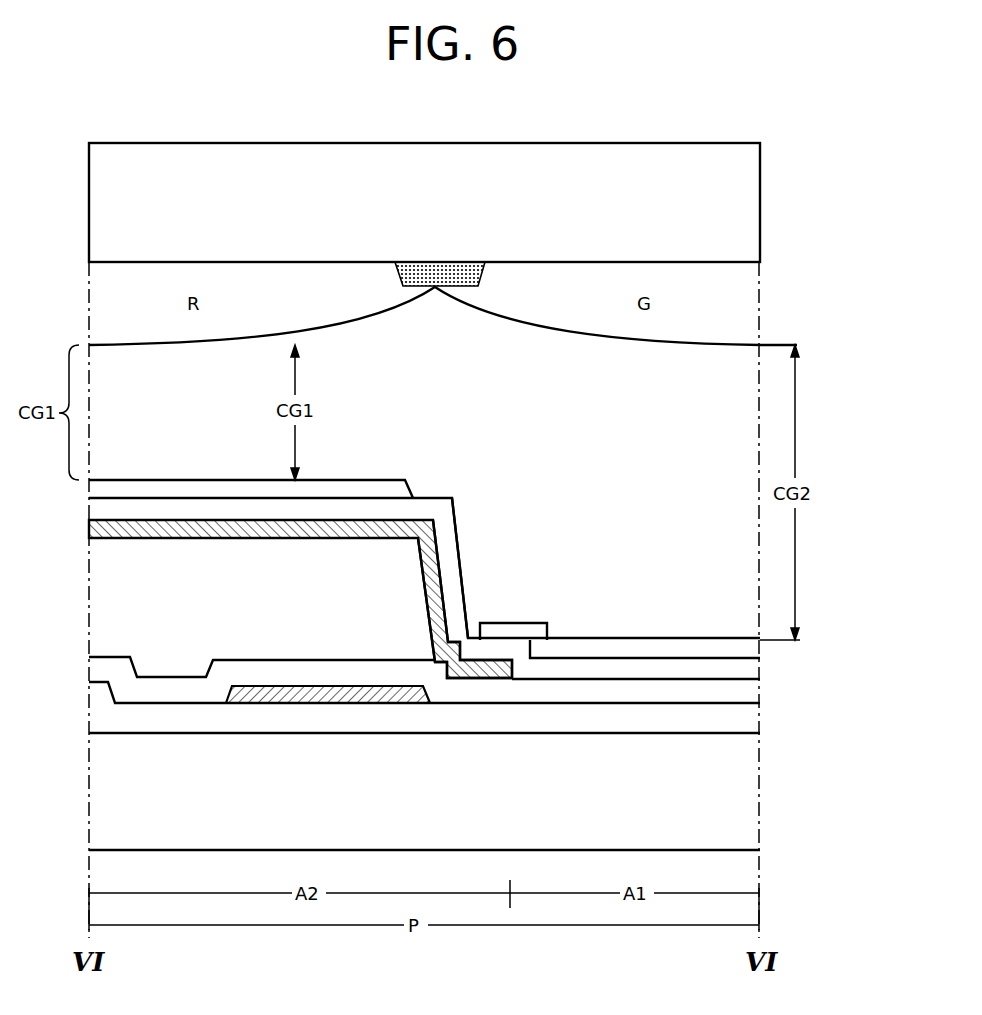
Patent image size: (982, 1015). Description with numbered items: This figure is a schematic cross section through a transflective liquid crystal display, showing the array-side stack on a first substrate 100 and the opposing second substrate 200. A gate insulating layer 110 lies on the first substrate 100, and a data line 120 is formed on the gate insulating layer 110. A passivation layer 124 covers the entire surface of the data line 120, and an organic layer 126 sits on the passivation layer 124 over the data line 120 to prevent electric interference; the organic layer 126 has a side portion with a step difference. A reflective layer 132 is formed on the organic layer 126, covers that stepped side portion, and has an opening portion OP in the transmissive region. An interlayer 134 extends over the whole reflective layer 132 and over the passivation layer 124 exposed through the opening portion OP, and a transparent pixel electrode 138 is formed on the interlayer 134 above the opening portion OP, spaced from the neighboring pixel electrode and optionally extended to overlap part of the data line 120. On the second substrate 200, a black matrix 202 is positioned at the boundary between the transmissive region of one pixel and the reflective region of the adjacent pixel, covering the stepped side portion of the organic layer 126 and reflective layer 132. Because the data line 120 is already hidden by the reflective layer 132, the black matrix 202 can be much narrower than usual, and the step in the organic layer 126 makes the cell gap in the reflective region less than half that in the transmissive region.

The first substrate 100 is at (731, 837).
The gate insulating layer 110 is at (755, 718).
The data line 120 is at (284, 684).
The passivation layer 124 is at (750, 697).
The organic layer 126 is at (202, 547).
The reflective layer 132 is at (443, 570).
The interlayer 134 is at (453, 578).
The transparent pixel electrode 138 is at (331, 486).
The second substrate 200 is at (716, 212).
The black matrix 202 is at (435, 288).
The opening portion OP is at (695, 601).